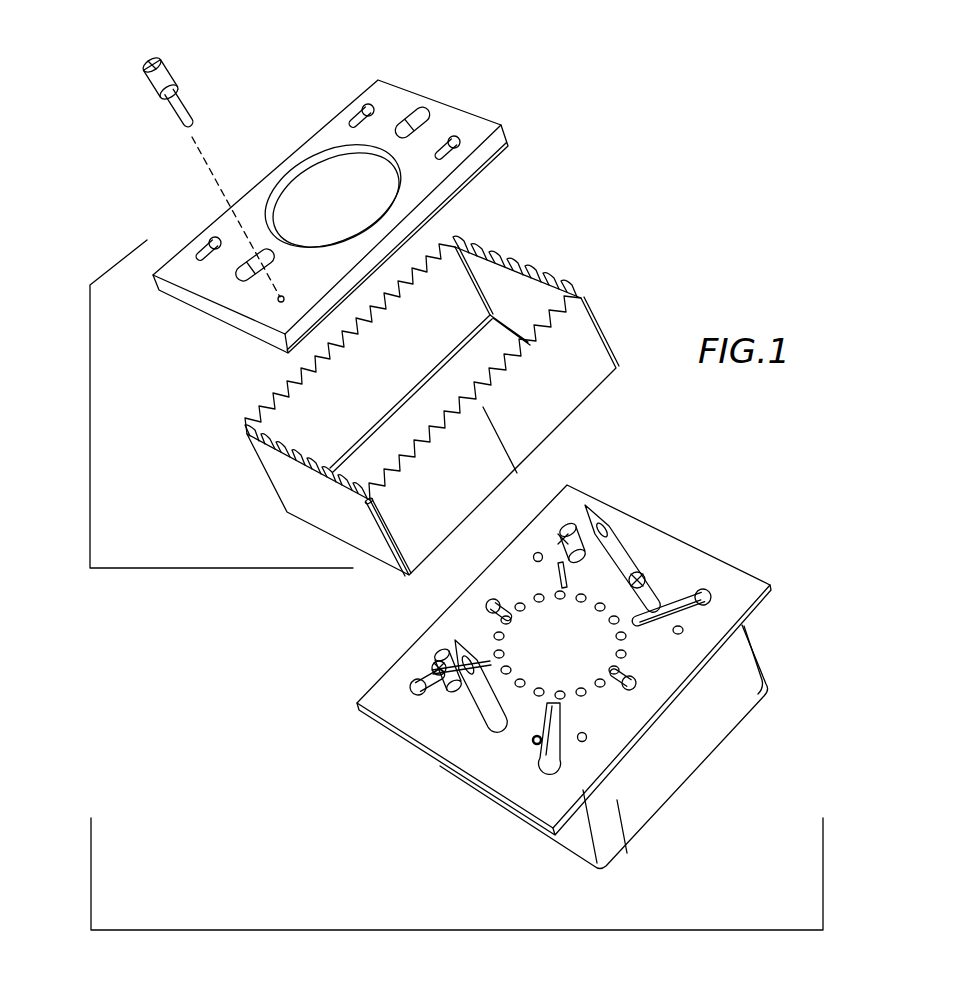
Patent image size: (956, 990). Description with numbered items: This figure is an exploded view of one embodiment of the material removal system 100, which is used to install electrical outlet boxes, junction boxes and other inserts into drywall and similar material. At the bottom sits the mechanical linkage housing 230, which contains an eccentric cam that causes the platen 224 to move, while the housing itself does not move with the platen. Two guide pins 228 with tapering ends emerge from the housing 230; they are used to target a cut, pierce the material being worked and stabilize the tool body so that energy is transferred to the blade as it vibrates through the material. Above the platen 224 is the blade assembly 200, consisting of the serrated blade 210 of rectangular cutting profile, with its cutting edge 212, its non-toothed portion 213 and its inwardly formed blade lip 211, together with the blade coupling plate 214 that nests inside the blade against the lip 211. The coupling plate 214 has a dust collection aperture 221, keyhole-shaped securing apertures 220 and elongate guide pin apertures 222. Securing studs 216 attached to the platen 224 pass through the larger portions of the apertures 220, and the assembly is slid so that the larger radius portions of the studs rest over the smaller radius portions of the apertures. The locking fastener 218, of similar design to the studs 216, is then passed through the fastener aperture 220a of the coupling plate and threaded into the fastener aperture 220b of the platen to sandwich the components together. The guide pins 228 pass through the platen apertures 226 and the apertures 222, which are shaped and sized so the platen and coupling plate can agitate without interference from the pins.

The material removal system 100 is at (467, 931).
The blade assembly 200 is at (90, 285).
The blade 210 is at (587, 355).
The blade lip 211 is at (496, 313).
The cutting edge 212 is at (540, 325).
The non-toothed portion 213 is at (585, 397).
The blade coupling plate 214 is at (402, 93).
The securing studs 216 is at (648, 586).
The locking fastener 218 is at (170, 78).
The securing apertures 220 is at (362, 106).
The fastener aperture 220a is at (278, 300).
The fastener aperture—platen 220b is at (536, 560).
The dust collection aperture 221 is at (293, 178).
The guide pin apertures 222 is at (431, 108).
The platen 224 is at (745, 622).
The platen apertures 226 is at (627, 570).
The guide pins 228 is at (567, 533).
The mechanical linkage housing 230 is at (714, 742).